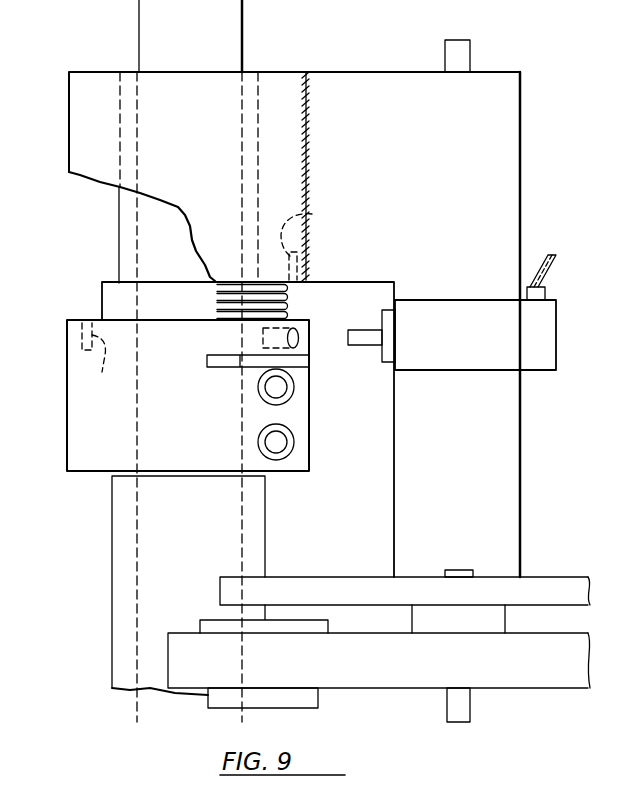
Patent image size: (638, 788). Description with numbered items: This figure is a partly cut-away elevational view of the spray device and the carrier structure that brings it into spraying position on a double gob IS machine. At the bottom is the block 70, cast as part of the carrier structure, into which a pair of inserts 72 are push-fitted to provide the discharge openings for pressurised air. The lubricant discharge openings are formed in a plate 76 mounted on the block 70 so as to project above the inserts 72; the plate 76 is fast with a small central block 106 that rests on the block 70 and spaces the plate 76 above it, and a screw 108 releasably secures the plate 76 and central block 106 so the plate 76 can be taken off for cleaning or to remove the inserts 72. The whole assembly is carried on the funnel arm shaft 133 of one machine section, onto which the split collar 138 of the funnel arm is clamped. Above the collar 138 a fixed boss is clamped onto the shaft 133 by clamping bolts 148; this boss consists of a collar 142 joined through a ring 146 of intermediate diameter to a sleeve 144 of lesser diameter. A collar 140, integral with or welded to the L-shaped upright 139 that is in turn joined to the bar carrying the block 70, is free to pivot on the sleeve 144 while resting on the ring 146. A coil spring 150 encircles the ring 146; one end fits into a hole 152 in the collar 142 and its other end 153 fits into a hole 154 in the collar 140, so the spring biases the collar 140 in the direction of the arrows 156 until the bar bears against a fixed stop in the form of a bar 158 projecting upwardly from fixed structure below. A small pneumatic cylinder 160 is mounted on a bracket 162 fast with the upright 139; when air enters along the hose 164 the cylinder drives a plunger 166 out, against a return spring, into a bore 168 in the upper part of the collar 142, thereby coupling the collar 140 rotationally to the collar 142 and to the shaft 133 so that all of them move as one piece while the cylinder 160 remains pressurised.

The block 70 is at (552, 668).
The inserts 72 is at (318, 698).
The plate 76 is at (558, 585).
The central block 106 is at (493, 621).
The screw 108 is at (460, 567).
The funnel arm shaft 133 is at (222, 13).
The collar 138 is at (118, 567).
The upright 139 is at (510, 472).
The collar 140 is at (205, 85).
The collar 142 is at (101, 471).
The sleeve 144 is at (125, 218).
The ring 146 is at (84, 291).
The clamping bolts 148 is at (258, 390).
The coil spring 150 is at (218, 296).
The hole 152 is at (96, 363).
The end of spring 153 is at (312, 265).
The hole 154 is at (308, 222).
The arrows 156 is at (218, 176).
The bar 158 is at (462, 58).
The pneumatic cylinder 160 is at (465, 307).
The bracket 162 is at (379, 320).
The hose 164 is at (548, 282).
The plunger 166 is at (368, 344).
The bore 168 is at (262, 334).